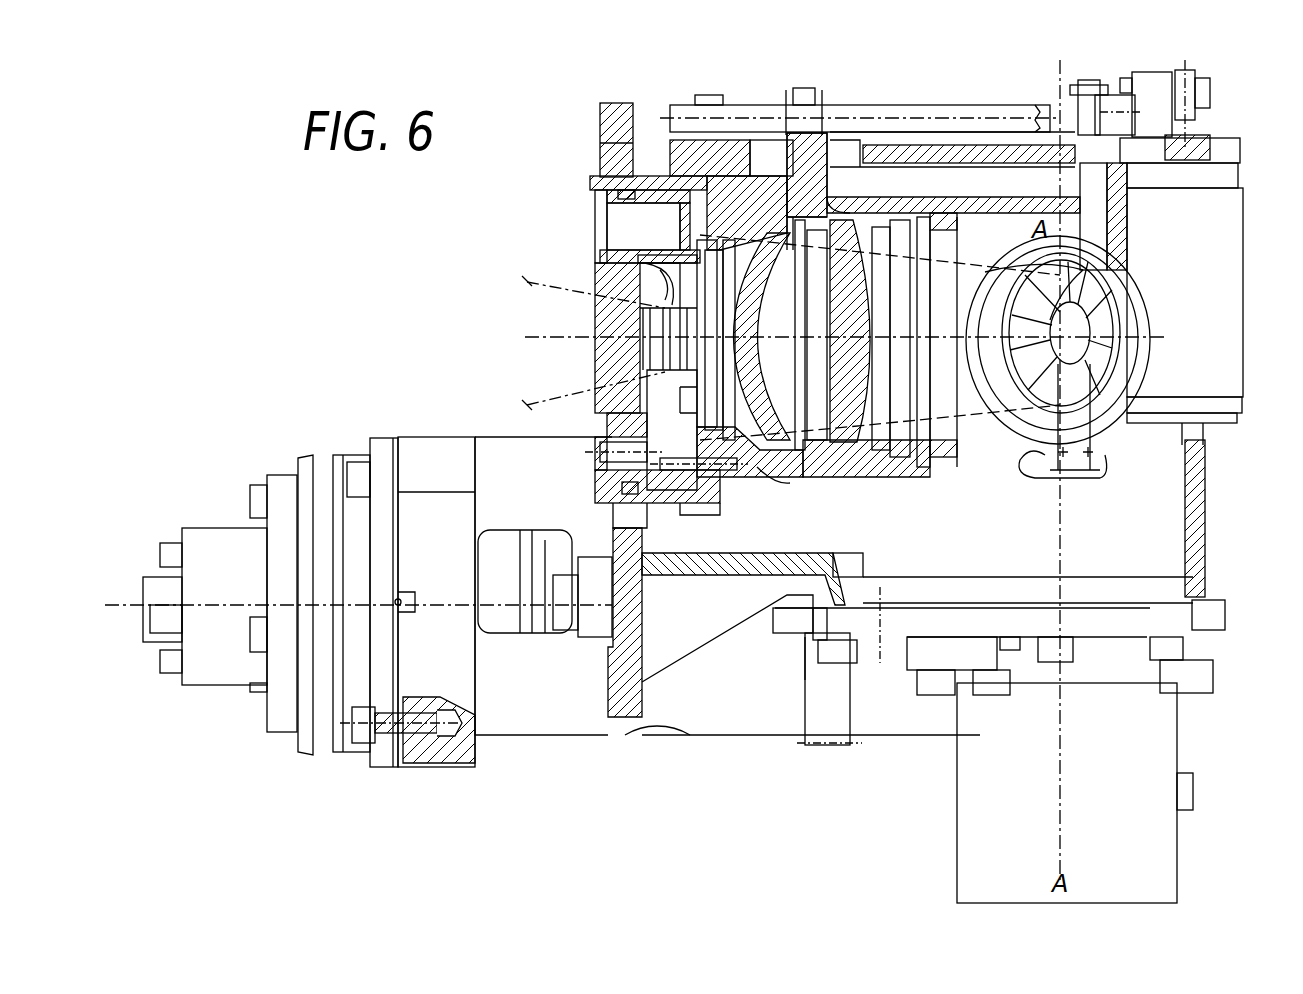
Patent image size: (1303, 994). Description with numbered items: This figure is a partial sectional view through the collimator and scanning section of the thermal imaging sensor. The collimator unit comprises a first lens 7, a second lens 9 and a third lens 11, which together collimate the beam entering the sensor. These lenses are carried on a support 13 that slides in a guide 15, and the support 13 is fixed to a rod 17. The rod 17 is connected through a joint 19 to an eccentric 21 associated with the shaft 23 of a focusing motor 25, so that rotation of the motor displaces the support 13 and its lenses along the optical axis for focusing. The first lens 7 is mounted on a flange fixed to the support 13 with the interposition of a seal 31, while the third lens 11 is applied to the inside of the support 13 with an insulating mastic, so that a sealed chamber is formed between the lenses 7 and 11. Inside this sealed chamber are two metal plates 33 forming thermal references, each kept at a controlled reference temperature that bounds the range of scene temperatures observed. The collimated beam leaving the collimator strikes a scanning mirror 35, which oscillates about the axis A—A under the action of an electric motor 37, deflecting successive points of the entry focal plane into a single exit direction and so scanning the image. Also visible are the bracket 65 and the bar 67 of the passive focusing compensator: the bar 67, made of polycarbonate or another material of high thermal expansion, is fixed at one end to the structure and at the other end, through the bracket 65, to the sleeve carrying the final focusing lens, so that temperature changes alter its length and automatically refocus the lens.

The first lens 7 is at (596, 330).
The second lens 9 is at (742, 325).
The third lens 11 is at (862, 300).
The support 13 is at (845, 480).
The guide 15 is at (885, 150).
The rod 17 is at (767, 107).
The joint 19 is at (1093, 100).
The eccentric 21 is at (1150, 93).
The shaft 23 is at (1200, 98).
The focusing motor 25 is at (1225, 232).
The seal 31 is at (634, 500).
The metal plates 33 is at (645, 262).
The scanning mirror 35 is at (1093, 282).
The electric motor 37 is at (1150, 845).
The bracket 65 is at (540, 622).
The bar 67 is at (570, 615).